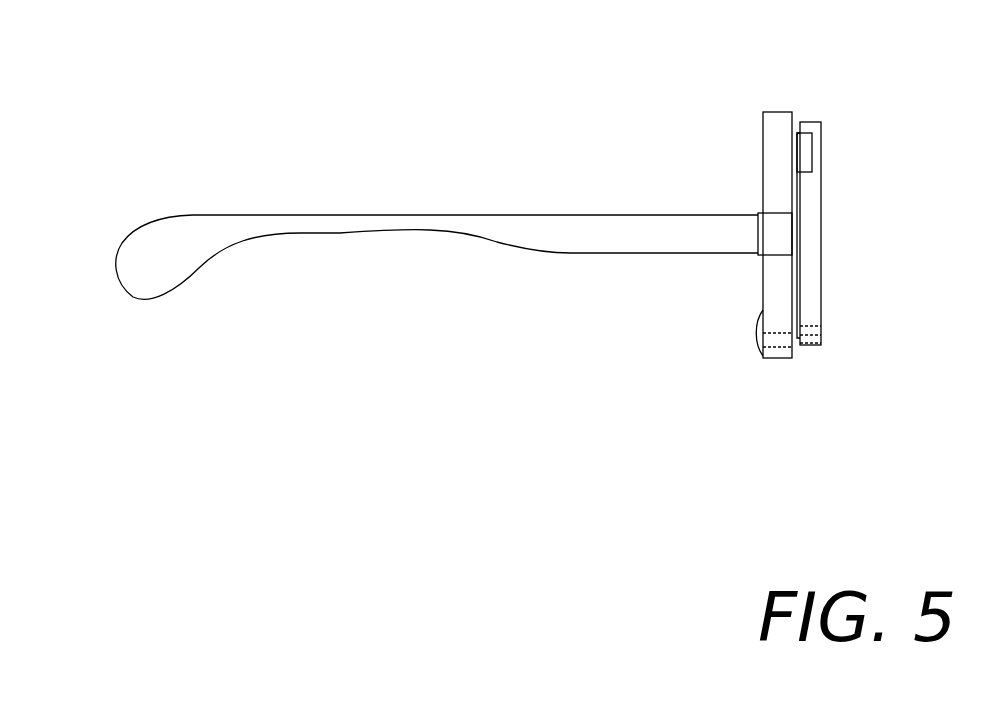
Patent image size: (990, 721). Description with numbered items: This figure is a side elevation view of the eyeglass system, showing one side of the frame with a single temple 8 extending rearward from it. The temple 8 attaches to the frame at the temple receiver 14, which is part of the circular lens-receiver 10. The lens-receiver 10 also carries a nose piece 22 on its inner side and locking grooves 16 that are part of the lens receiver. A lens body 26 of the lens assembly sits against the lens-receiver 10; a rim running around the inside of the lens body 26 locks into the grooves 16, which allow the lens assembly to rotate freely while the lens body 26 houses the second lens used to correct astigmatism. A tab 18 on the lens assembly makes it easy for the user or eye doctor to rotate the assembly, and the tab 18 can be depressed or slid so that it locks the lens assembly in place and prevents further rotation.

The temple 8 is at (490, 215).
The lens-receiver 10 is at (763, 112).
The temple receiver 14 is at (773, 213).
The locking grooves 16 is at (797, 338).
The tab 18 is at (806, 133).
The nose piece 22 is at (756, 329).
The lens body 26 is at (821, 122).